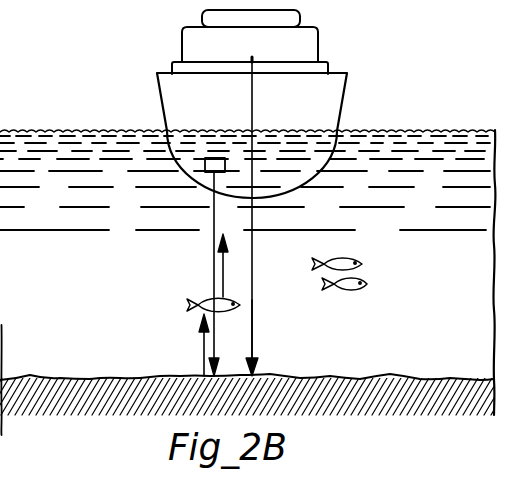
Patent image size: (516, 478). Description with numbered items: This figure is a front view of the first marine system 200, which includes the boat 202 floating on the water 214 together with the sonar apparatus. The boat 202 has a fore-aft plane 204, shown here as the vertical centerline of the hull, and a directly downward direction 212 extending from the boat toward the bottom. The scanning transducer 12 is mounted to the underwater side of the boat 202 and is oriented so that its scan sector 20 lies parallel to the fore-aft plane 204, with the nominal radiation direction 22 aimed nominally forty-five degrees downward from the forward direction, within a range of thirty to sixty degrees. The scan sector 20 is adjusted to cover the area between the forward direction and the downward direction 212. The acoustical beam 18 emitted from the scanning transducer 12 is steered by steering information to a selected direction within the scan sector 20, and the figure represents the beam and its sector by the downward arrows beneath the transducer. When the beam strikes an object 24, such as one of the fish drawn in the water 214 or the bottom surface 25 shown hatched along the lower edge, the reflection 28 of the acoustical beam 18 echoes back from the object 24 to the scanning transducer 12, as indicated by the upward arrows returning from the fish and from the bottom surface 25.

The first marine system 200 is at (223, 104).
The boat 202 is at (310, 56).
The fore-aft plane 204 is at (253, 102).
The scanning transducer 12 is at (213, 158).
The acoustical beam 18 is at (163, 274).
The scan sector 20 is at (163, 274).
The nominal radiation direction 22 is at (212, 262).
The reflection 28 is at (213, 283).
The object 24 is at (381, 266).
The downward direction 212 is at (253, 297).
The water 214 is at (455, 327).
The bottom surface 25 is at (328, 377).